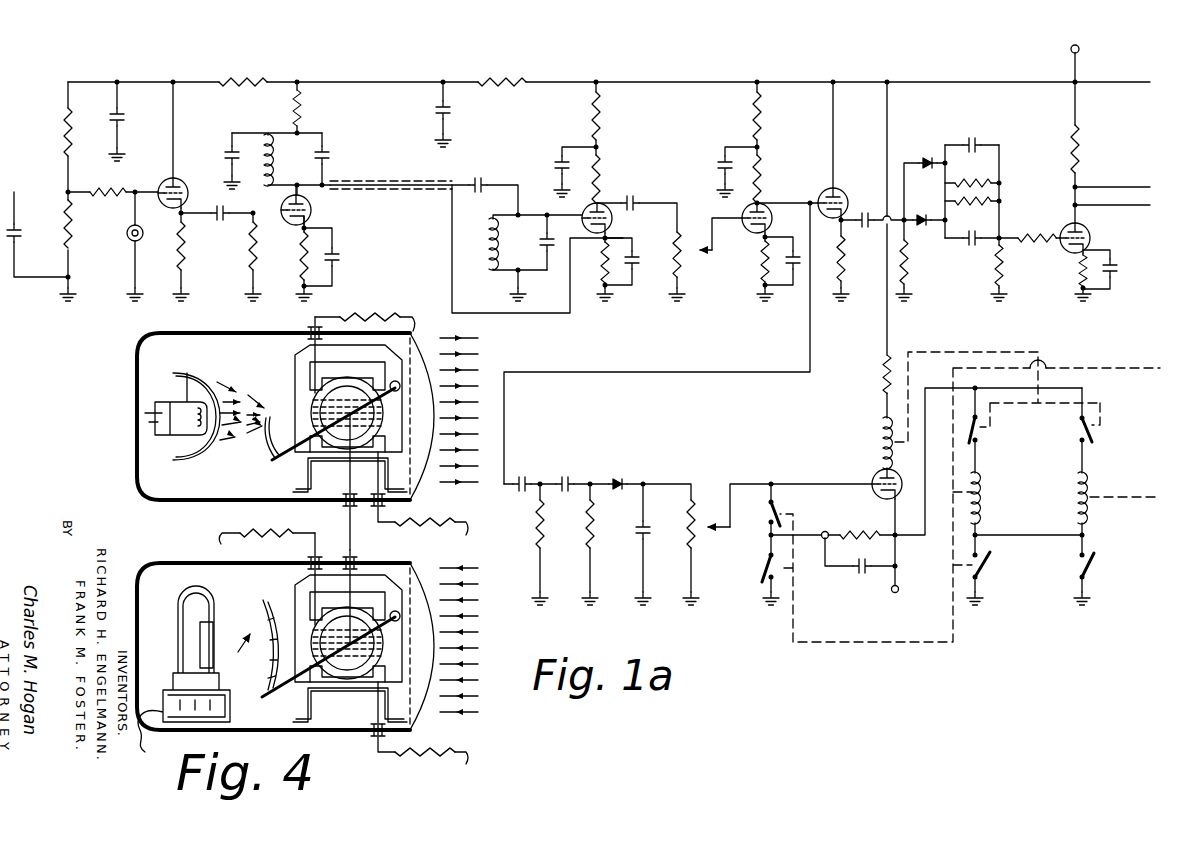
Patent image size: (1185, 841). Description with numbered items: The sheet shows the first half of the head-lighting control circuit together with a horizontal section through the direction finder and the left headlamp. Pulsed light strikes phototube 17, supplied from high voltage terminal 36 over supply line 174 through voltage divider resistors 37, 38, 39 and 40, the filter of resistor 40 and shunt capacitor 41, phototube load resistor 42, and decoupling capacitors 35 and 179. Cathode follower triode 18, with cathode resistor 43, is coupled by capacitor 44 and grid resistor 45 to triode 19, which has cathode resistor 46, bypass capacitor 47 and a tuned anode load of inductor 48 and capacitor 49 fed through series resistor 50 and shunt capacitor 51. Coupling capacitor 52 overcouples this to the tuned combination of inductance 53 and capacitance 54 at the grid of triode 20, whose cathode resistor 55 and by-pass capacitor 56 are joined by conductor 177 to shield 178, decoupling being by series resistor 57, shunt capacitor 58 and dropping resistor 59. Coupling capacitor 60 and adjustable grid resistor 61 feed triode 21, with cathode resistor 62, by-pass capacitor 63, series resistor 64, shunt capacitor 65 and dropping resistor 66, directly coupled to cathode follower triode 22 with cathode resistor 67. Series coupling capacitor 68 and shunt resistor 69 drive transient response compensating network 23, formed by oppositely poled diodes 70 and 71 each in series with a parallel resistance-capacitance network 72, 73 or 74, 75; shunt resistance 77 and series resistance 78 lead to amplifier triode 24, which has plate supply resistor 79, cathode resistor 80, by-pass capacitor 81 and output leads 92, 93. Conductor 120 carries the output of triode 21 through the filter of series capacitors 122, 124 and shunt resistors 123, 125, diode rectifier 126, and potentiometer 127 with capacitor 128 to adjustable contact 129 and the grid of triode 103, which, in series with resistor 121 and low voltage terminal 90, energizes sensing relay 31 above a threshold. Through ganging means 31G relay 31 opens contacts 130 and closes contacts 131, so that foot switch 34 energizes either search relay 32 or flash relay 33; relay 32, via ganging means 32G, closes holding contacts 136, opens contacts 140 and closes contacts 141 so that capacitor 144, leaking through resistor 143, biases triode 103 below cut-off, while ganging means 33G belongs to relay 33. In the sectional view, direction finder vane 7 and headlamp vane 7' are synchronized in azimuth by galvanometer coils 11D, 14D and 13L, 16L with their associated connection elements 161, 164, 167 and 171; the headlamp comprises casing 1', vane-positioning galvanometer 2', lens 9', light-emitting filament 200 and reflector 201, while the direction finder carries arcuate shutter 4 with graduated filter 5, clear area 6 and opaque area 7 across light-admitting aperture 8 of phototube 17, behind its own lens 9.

In FIG. 1A, the phototube 17 is at (126, 244).
In FIG. 4, the phototube 17 is at (175, 613).
In FIG. 1A, the triode 18 is at (164, 210).
In FIG. 1A, the triode 19 is at (288, 222).
In FIG. 1A, the triode 20 is at (614, 216).
In FIG. 1A, the triode 21 is at (756, 229).
In FIG. 1A, the triode 22 is at (825, 189).
In FIG. 1A, the transient response compensating network 23 is at (956, 254).
In FIG. 1A, the triode 24 is at (1064, 221).
In FIG. 1A, the sensing relay 31 is at (874, 445).
In FIG. 1A, the search relay 32 is at (990, 496).
In FIG. 1A, the flash relay 33 is at (1090, 486).
In FIG. 1A, the foot switch 34 is at (1100, 574).
In FIG. 1A, the shunt capacitor 35 is at (122, 120).
In FIG. 1A, the high voltage terminal 36 is at (1070, 49).
In FIG. 1A, the voltage divider resistor 37 is at (499, 80).
In FIG. 1A, the voltage divider resistor 38 is at (246, 80).
In FIG. 1A, the voltage divider resistor 39 is at (66, 130).
In FIG. 1A, the voltage divider resistor 40 is at (72, 238).
In FIG. 1A, the shunt capacitor 41 is at (17, 243).
In FIG. 1A, the phototube load resistor 42 is at (112, 192).
In FIG. 1A, the cathode resistor 43 is at (186, 262).
In FIG. 1A, the capacitor 44 is at (225, 223).
In FIG. 1A, the grid resistor 45 is at (257, 262).
In FIG. 1A, the cathode resistor 46 is at (312, 238).
In FIG. 1A, the capacitor 47 is at (337, 260).
In FIG. 1A, the inductor 48 is at (276, 160).
In FIG. 1A, the capacitor 49 is at (328, 155).
In FIG. 1A, the series resistor 50 is at (303, 104).
In FIG. 1A, the shunt capacitor 51 is at (240, 152).
In FIG. 1A, the coupling capacitor 52 is at (482, 180).
In FIG. 1A, the inductance 53 is at (488, 250).
In FIG. 1A, the capacitance 54 is at (541, 236).
In FIG. 1A, the cathode resistor 55 is at (600, 285).
In FIG. 1A, the by-pass capacitor 56 is at (634, 272).
In FIG. 1A, the series resistor 57 is at (604, 112).
In FIG. 1A, the shunt capacitor 58 is at (556, 158).
In FIG. 1A, the dropping resistor 59 is at (603, 180).
In FIG. 1A, the coupling capacitor 60 is at (632, 196).
In FIG. 1A, the adjustable grid resistor 61 is at (686, 250).
In FIG. 1A, the cathode resistor 62 is at (762, 263).
In FIG. 1A, the by-pass capacitor 63 is at (795, 272).
In FIG. 1A, the series resistor 64 is at (750, 115).
In FIG. 1A, the shunt capacitor 65 is at (718, 160).
In FIG. 1A, the dropping resistor 66 is at (762, 175).
In FIG. 1A, the cathode resistor 67 is at (840, 282).
In FIG. 1A, the series coupling capacitor 68 is at (858, 202).
In FIG. 1A, the shunt resistor 69 is at (906, 270).
In FIG. 1A, the diode 70 is at (928, 158).
In FIG. 1A, the diode 71 is at (922, 212).
In FIG. 1A, the parallel resistance-capacitance network 72 is at (975, 140).
In FIG. 1A, the parallel resistance-capacitance network 73 is at (986, 170).
In FIG. 1A, the parallel resistance-capacitance network 74 is at (978, 252).
In FIG. 1A, the parallel resistance-capacitance network 75 is at (972, 213).
In FIG. 1A, the shunt resistance 77 is at (1010, 266).
In FIG. 1A, the series resistance 78 is at (1040, 232).
In FIG. 1A, the plate supply resistor 79 is at (1082, 154).
In FIG. 1A, the cathode resistor 80 is at (1078, 282).
In FIG. 1A, the capacitor 81 is at (1116, 268).
In FIG. 1A, the low voltage battery terminal 90 is at (900, 588).
In FIG. 1A, the output lead 92 is at (1112, 186).
In FIG. 1A, the output lead 93 is at (1112, 206).
In FIG. 1A, the triode 103 is at (876, 500).
In FIG. 1A, the conductor 120 is at (660, 372).
In FIG. 1A, the resistor 121 is at (880, 374).
In FIG. 1A, the series capacitance 122 is at (530, 478).
In FIG. 1A, the shunt resistance 123 is at (548, 536).
In FIG. 1A, the series capacitance 124 is at (570, 478).
In FIG. 1A, the shunt resistance 125 is at (598, 536).
In FIG. 1A, the series diode rectifier 126 is at (626, 478).
In FIG. 1A, the potentiometer 127 is at (700, 527).
In FIG. 1A, the capacitor 128 is at (652, 548).
In FIG. 1A, the adjustable contact 129 is at (718, 532).
In FIG. 1A, the contacts 130 is at (980, 439).
In FIG. 1A, the contacts 131 is at (1078, 439).
In FIG. 1A, the holding contacts 136 is at (992, 569).
In FIG. 1A, the contacts 140 is at (760, 590).
In FIG. 1A, the contacts 141 is at (766, 496).
In FIG. 1A, the resistor 143 is at (882, 541).
In FIG. 1A, the capacitor 144 is at (866, 580).
In FIG. 4, the resistor 161 is at (221, 541).
In FIG. 4, the resistor 164 is at (416, 322).
In FIG. 4, the resistor 167 is at (462, 761).
In FIG. 4, the resistor 171 is at (462, 530).
In FIG. 1A, the supply conductor 174 is at (1106, 82).
In FIG. 4, the supply conductor 174 is at (350, 512).
In FIG. 1A, the conductor 177 is at (450, 248).
In FIG. 1A, the shield 178 is at (386, 188).
In FIG. 1A, the capacitor 179 is at (448, 102).
In FIG. 1A, the ganging means 31G is at (972, 352).
In FIG. 1A, the ganging means 32G is at (1115, 368).
In FIG. 1A, the ganging means 33G is at (1138, 497).
In FIG. 4, the casing 1' is at (273, 429).
In FIG. 4, the vane-positioning galvanometer 2' is at (335, 511).
In FIG. 4, the arcuate shutter 4 is at (237, 654).
In FIG. 4, the graduated filter 5 is at (270, 618).
In FIG. 4, the clear area 6 is at (269, 641).
In FIG. 4, the opaque area 7 is at (318, 654).
In FIG. 4, the headlamp vane 7' is at (322, 422).
In FIG. 4, the light-admitting aperture 8 is at (210, 626).
In FIG. 4, the window 9 is at (430, 653).
In FIG. 4, the lens 9' is at (430, 420).
In FIG. 4, the direction finder galvanometer coil 11D is at (350, 682).
In FIG. 4, the left head lamp galvanometer coil 13L is at (350, 432).
In FIG. 4, the galvanometer coil 14D is at (360, 640).
In FIG. 4, the galvanometer coil 16L is at (312, 393).
In FIG. 4, the light-emitting filament 200 is at (186, 395).
In FIG. 4, the reflector 201 is at (190, 446).